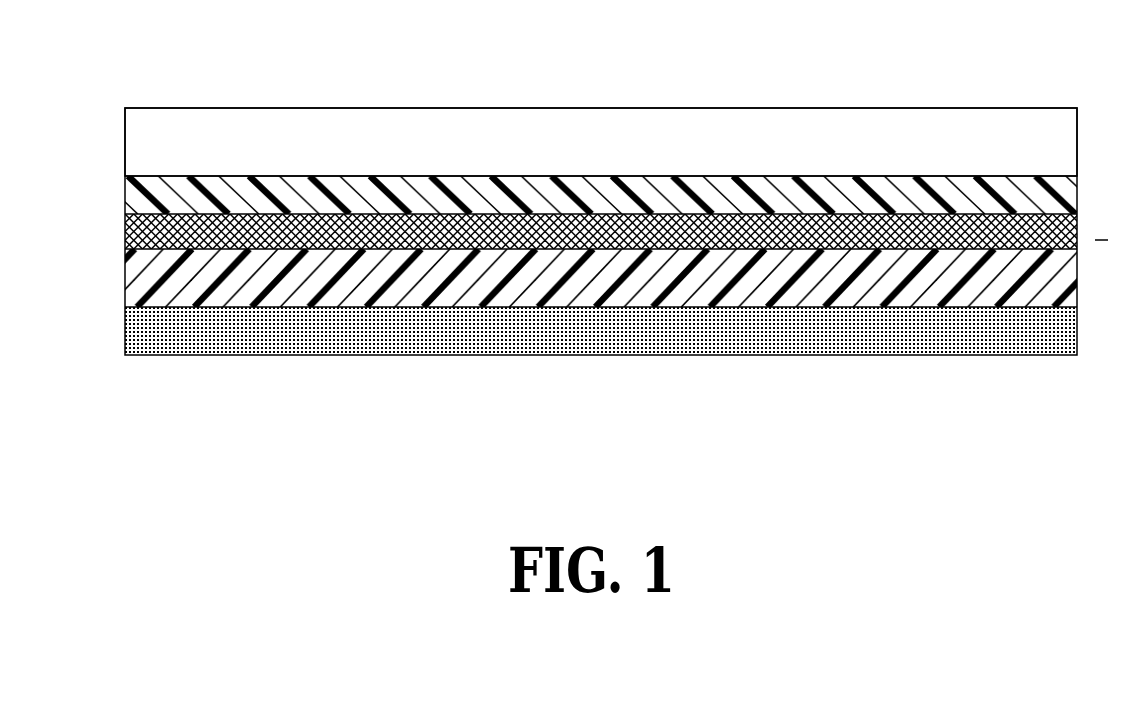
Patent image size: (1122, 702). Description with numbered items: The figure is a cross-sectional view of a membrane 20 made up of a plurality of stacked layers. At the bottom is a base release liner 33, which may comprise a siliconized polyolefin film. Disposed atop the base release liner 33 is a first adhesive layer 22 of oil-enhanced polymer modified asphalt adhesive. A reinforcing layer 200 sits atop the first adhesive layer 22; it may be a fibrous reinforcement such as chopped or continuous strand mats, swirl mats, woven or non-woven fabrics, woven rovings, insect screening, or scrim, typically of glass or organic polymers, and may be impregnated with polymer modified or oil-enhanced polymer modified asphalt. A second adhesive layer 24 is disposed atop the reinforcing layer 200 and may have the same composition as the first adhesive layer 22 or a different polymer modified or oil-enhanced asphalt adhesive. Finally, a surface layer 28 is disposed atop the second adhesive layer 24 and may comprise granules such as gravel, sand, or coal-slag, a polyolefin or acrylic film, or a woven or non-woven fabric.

The membrane 20 is at (557, 102).
The surface layer 28 is at (125, 118).
The second adhesive layer 24 is at (152, 183).
The reinforcing layer 200 is at (148, 227).
The first adhesive layer 22 is at (143, 280).
The base release liner 33 is at (995, 343).